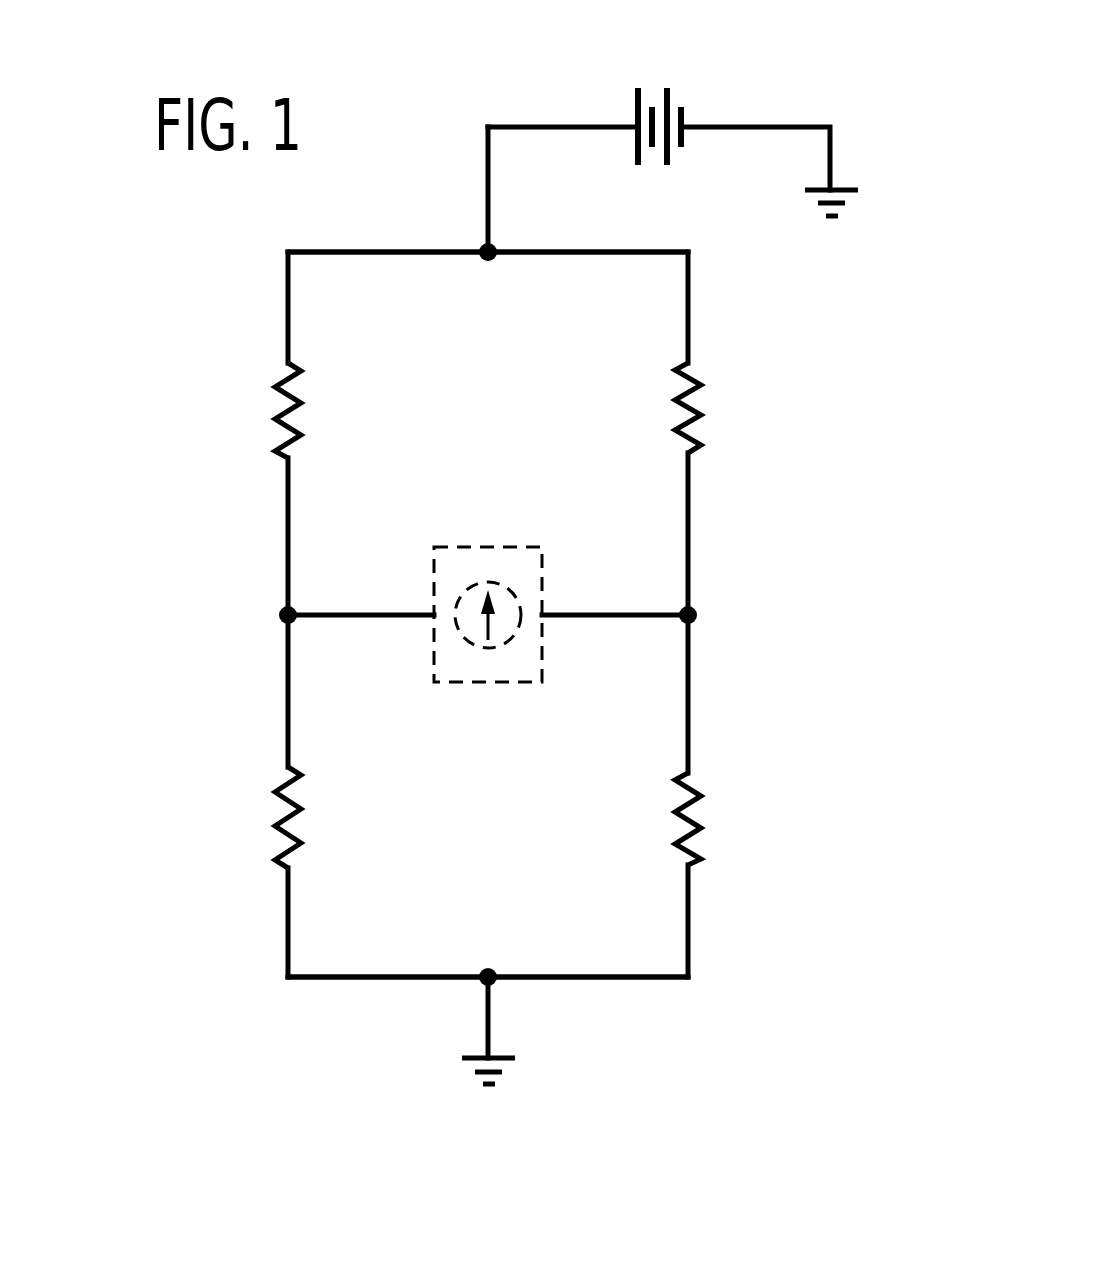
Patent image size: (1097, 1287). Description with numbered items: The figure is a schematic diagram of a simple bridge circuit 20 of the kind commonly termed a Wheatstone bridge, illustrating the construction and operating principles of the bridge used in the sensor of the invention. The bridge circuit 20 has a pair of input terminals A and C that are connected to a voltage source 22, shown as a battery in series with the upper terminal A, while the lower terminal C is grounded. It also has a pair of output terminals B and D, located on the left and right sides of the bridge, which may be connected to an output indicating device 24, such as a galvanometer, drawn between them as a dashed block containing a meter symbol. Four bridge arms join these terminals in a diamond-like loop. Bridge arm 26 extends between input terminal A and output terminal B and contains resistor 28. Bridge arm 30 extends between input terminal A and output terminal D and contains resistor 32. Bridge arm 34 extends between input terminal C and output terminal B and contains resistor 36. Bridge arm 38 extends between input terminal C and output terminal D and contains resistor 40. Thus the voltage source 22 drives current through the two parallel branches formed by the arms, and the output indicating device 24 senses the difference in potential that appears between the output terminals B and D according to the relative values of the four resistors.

The bridge circuit 20 is at (93, 684).
The voltage source 22 is at (665, 72).
The output indicating device 24 is at (482, 546).
The bridge arm 26 is at (583, 253).
The resistor 28 is at (697, 417).
The bridge arm 30 is at (383, 253).
The resistor 32 is at (278, 420).
The bridge arm 34 is at (587, 980).
The resistor 36 is at (698, 830).
The bridge arm 38 is at (390, 980).
The resistor 40 is at (278, 832).